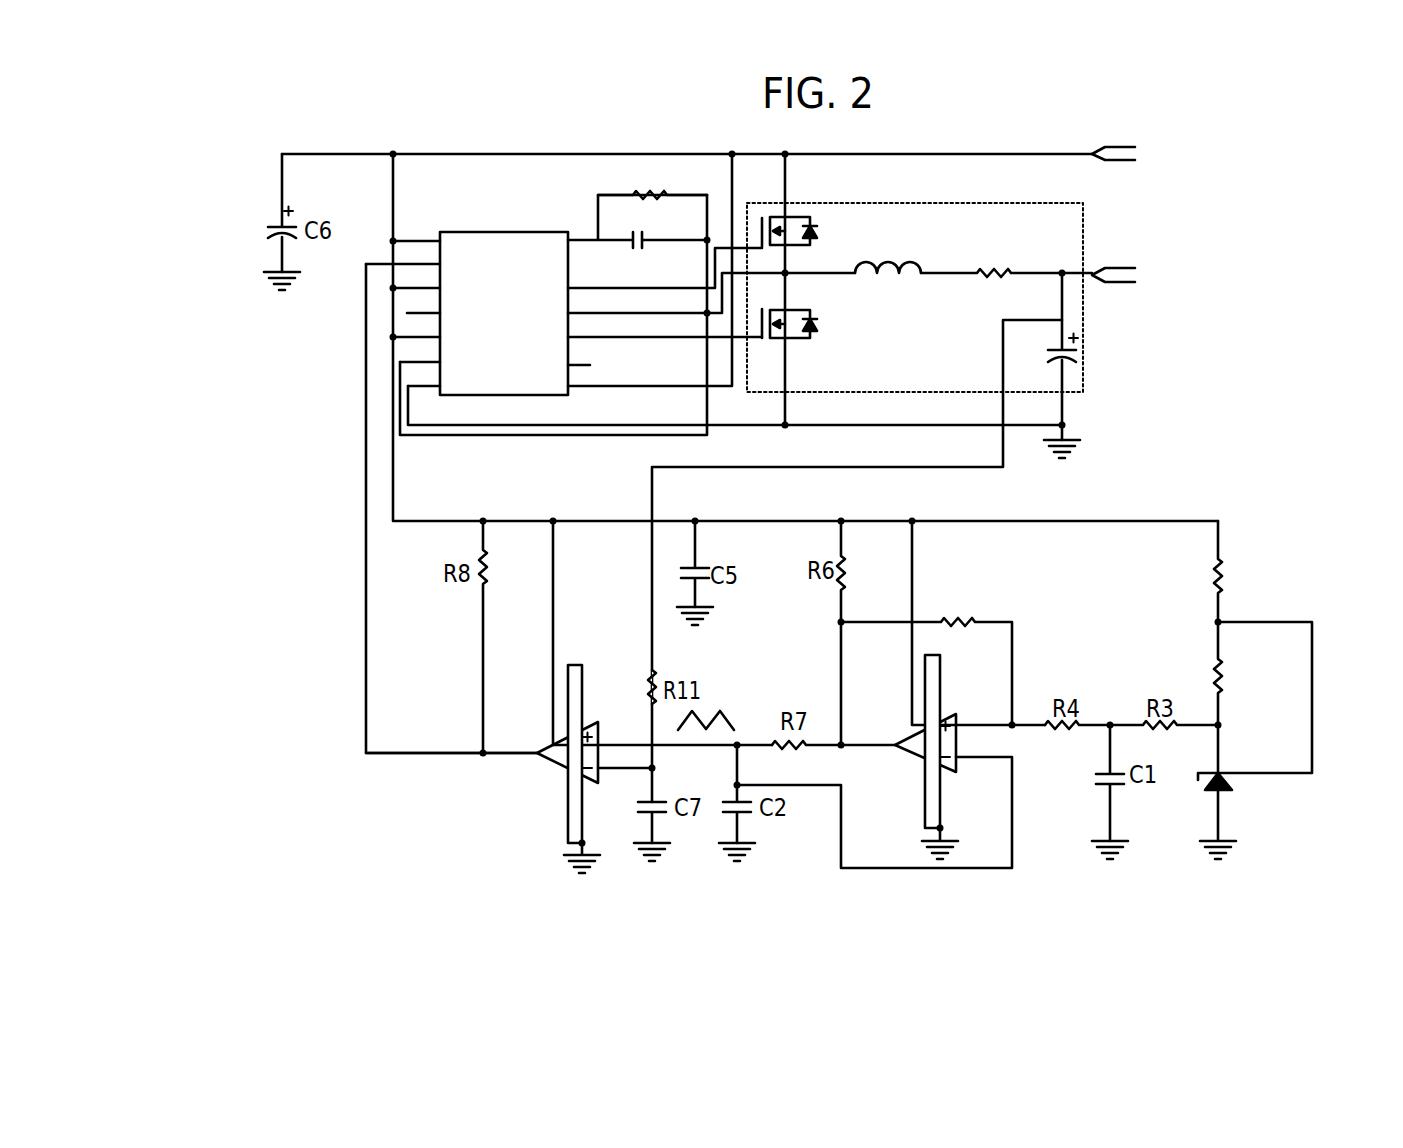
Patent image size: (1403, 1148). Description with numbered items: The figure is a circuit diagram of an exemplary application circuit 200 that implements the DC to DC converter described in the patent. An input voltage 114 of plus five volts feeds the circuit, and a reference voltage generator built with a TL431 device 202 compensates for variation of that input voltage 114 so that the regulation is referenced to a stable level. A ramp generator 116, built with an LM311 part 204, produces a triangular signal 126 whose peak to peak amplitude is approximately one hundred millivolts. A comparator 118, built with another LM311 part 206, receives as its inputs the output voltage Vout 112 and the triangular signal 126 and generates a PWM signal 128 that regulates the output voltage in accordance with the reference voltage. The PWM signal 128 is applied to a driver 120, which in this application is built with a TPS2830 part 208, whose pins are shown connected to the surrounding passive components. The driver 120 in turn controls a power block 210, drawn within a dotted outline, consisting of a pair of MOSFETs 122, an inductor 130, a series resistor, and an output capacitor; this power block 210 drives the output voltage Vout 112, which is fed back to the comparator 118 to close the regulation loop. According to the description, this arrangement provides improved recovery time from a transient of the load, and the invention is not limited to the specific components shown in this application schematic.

The application circuit 200 is at (382, 128).
The driver 120 is at (714, 294).
The U1 (TPS2830) 208 is at (487, 238).
The MOSFETs Q1 and Q2 122 is at (799, 214).
The power block 210 is at (892, 486).
The input voltage 114 is at (1112, 145).
The output voltage Vout 112 is at (1112, 267).
The inductor L1 130 is at (894, 262).
The U2 (LM311) 206 is at (572, 665).
The triangular signal 126 is at (719, 698).
The PWM signal 128 is at (425, 762).
The comparator 118 is at (654, 720).
The U3 (LM311) 204 is at (993, 678).
The ramp generator 116 is at (954, 825).
The D1 (TL431) 202 is at (1250, 760).